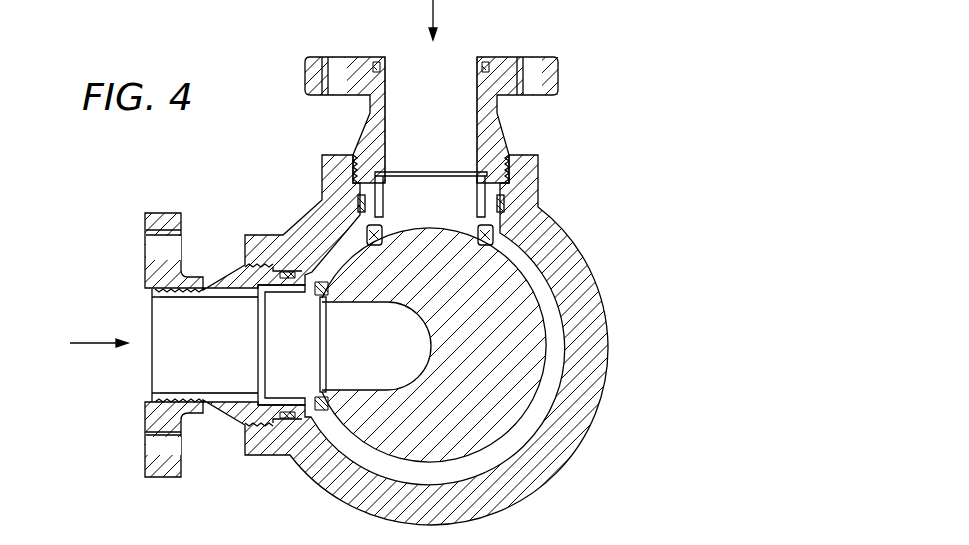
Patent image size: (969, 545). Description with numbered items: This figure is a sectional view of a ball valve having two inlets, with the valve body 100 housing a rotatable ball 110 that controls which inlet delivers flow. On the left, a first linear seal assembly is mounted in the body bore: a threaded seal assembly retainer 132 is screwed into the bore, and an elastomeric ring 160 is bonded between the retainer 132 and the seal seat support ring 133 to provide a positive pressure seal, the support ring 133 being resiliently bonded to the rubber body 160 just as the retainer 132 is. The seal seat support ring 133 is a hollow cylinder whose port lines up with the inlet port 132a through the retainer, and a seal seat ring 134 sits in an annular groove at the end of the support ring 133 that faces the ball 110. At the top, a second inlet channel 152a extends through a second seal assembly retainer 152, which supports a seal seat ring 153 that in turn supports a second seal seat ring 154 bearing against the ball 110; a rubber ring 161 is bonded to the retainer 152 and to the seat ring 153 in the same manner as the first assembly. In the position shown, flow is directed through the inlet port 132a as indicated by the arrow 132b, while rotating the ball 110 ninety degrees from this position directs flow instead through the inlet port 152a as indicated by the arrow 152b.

The valve body 100 is at (559, 226).
The ball 110 is at (505, 358).
The seal assembly retainer 132 is at (236, 272).
The inlet port 132a is at (173, 392).
The arrow 132b is at (97, 337).
The seal seat support ring 133 is at (272, 346).
The seal seat ring 134 is at (318, 295).
The seal assembly retainer 152 is at (494, 147).
The second inlet channel 152a is at (476, 87).
The arrow 152b is at (438, 0).
The seal seat ring 153 is at (478, 208).
The second seal seat ring 154 is at (484, 243).
The elastomeric ring 160 is at (275, 292).
The rubber ring 161 is at (473, 185).